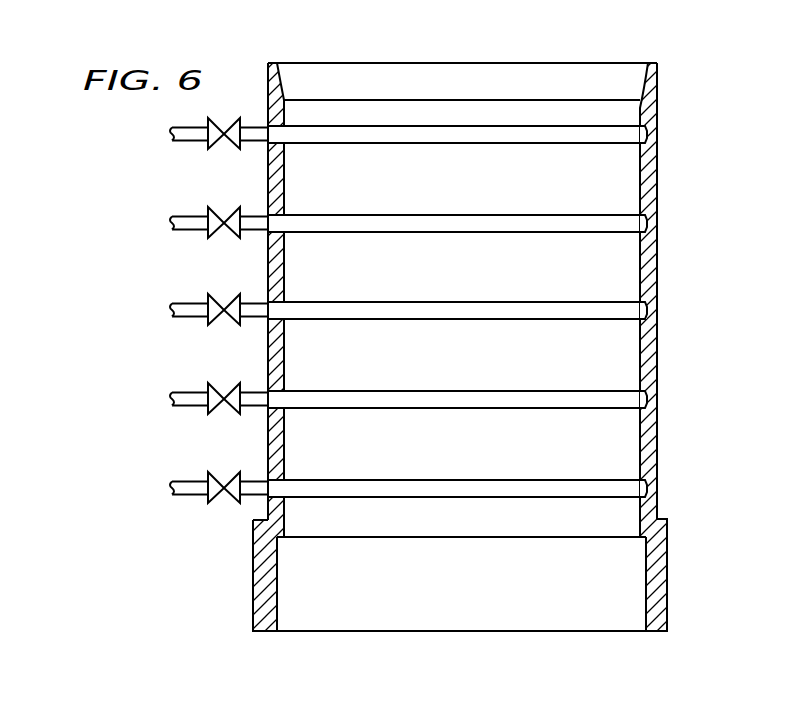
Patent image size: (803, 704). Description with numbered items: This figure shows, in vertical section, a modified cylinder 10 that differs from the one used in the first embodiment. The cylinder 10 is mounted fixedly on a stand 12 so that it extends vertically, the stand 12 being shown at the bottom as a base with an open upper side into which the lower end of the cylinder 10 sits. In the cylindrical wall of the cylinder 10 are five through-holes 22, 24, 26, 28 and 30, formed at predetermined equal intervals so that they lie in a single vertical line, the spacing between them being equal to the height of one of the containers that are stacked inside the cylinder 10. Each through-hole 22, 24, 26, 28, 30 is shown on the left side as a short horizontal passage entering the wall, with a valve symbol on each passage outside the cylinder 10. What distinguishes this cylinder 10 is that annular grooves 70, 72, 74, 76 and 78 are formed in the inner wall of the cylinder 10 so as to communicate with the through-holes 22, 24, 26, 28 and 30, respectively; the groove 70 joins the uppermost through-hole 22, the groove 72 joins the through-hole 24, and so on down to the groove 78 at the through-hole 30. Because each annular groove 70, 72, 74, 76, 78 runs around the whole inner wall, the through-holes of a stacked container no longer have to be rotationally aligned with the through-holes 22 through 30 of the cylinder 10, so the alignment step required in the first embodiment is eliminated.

The cylinder 10 is at (657, 166).
The stand 12 is at (667, 541).
The through-hole 22 is at (274, 141).
The through-hole 24 is at (274, 230).
The through-hole 26 is at (274, 318).
The through-hole 28 is at (268, 408).
The through-hole 30 is at (268, 495).
The annular groove 70 is at (630, 124).
The annular groove 72 is at (634, 222).
The annular groove 74 is at (636, 310).
The annular groove 76 is at (638, 399).
The annular groove 78 is at (640, 486).